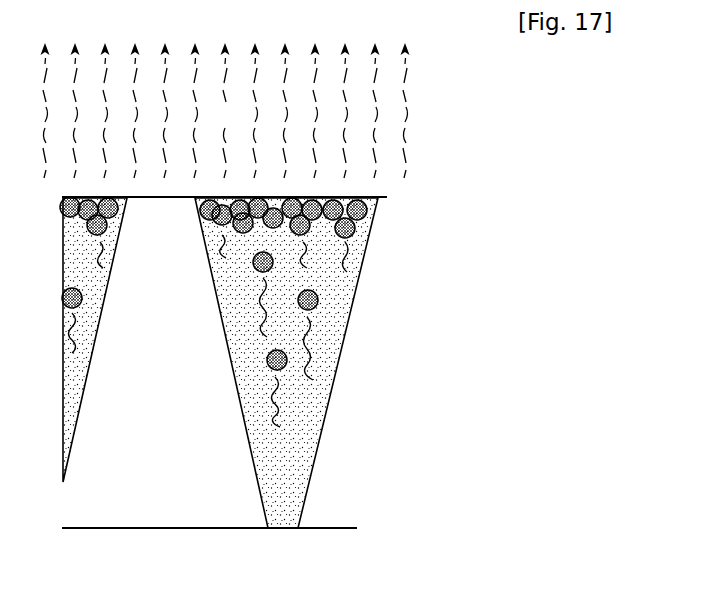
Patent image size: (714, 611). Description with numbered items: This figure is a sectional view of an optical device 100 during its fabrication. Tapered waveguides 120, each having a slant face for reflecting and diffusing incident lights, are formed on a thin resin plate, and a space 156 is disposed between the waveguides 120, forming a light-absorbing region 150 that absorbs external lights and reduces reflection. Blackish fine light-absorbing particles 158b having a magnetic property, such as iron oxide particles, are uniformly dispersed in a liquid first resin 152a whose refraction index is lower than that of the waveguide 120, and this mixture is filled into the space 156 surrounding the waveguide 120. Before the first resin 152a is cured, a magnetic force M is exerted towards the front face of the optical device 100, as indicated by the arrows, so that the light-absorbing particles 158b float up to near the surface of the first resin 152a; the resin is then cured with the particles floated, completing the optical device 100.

The optical device 100 is at (441, 149).
The waveguide 120 is at (178, 488).
The light-absorbing region 150 is at (302, 416).
The first resin 152a is at (337, 293).
The space 156 is at (333, 352).
The light-absorbing particles 158b is at (378, 203).